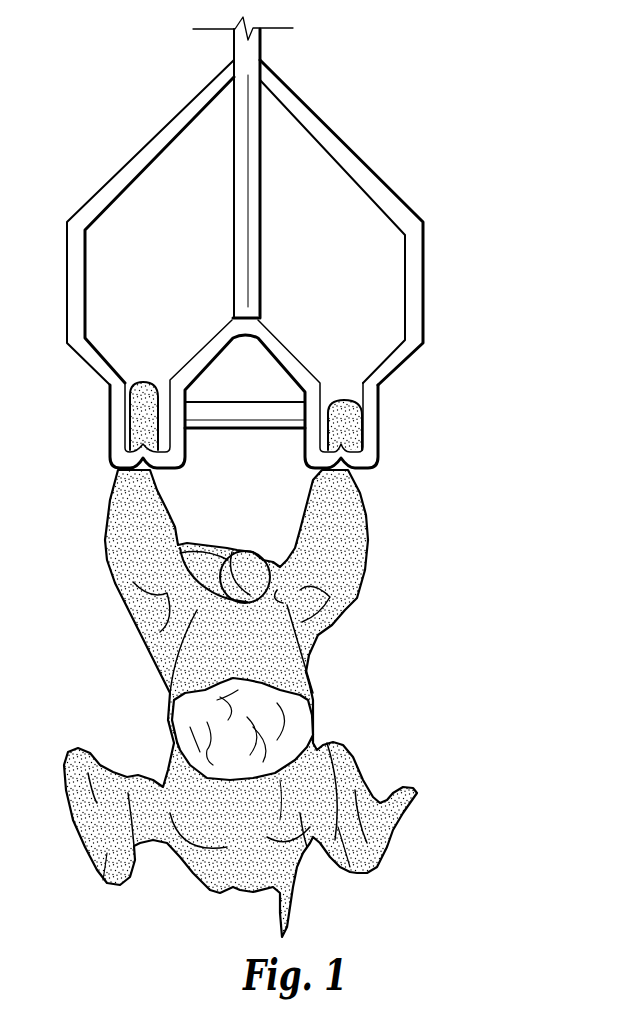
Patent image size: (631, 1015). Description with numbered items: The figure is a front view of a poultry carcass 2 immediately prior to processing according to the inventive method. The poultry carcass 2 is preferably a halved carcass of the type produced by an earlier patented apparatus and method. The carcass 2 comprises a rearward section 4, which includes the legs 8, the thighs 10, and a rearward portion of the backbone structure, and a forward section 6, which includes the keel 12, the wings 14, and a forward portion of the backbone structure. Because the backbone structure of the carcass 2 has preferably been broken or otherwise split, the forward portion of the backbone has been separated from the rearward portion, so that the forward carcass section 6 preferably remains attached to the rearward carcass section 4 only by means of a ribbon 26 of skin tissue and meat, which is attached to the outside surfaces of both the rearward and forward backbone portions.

The poultry carcass 2 is at (108, 625).
The rearward section 4 is at (160, 623).
The forward section 6 is at (200, 805).
The legs 8 is at (135, 515).
The thighs 10 is at (153, 575).
The keel 12 is at (280, 783).
The wings 14 is at (105, 877).
The ribbon of skin tissue and meat 26 is at (197, 750).